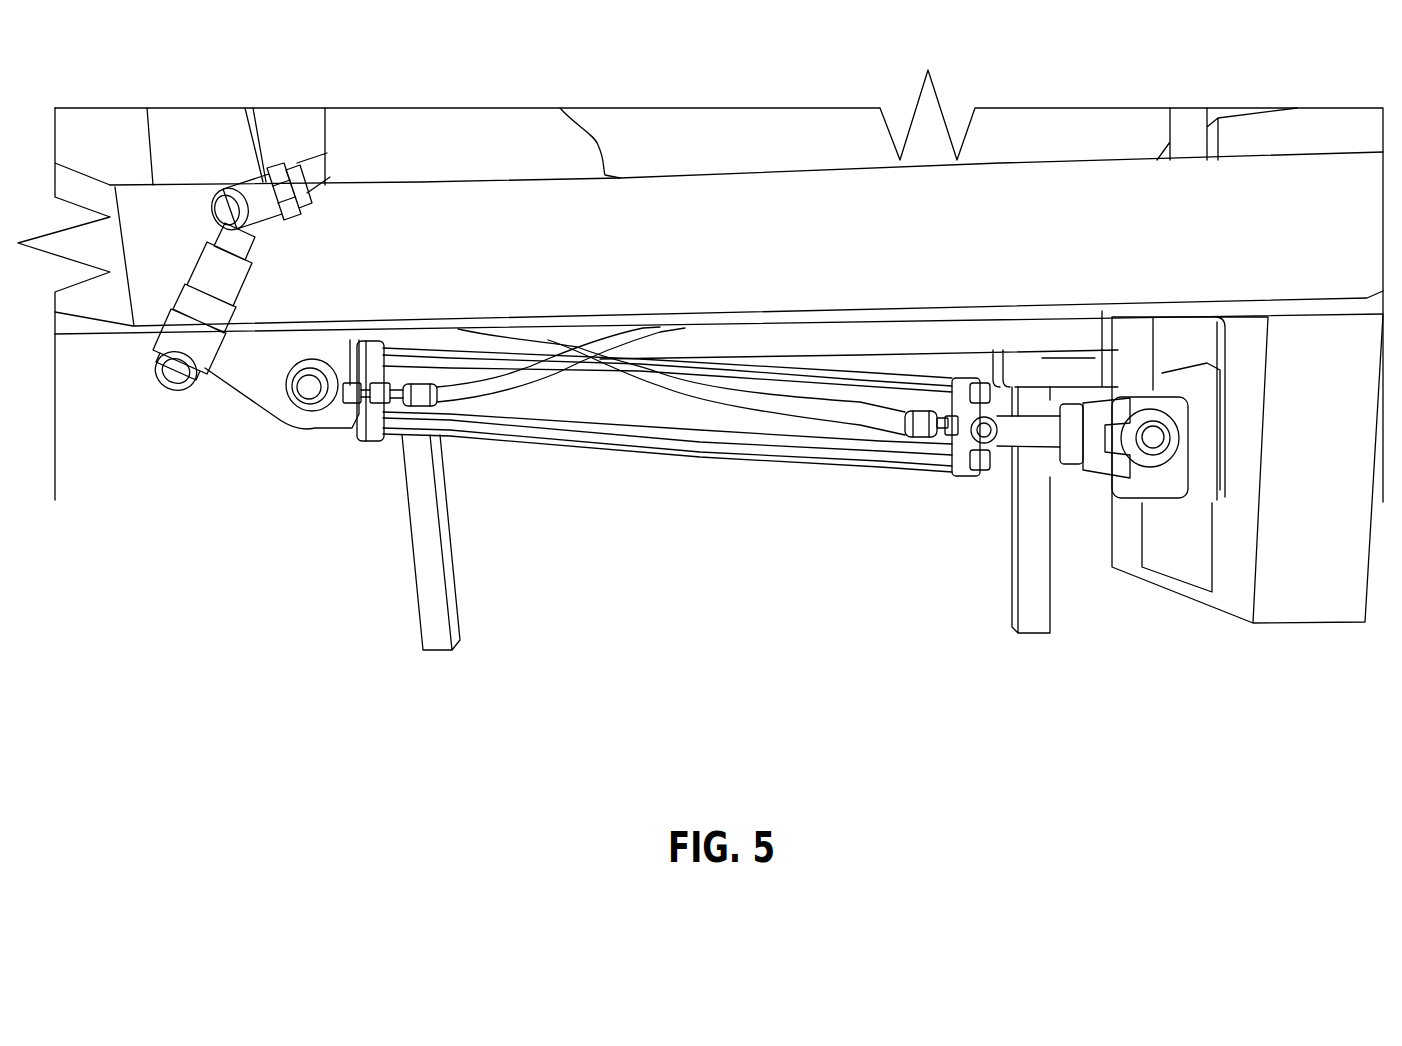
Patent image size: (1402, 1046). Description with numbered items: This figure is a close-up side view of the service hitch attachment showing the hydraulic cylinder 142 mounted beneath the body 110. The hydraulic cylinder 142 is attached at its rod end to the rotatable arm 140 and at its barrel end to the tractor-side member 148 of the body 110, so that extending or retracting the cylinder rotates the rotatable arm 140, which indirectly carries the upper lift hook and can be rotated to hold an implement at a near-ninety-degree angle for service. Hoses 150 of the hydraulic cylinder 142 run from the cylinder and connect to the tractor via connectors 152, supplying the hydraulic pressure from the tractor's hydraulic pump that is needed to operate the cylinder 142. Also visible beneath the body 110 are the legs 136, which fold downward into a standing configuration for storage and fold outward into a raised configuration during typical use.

The body 110 is at (783, 238).
The legs 136 is at (433, 645).
The rotatable arm 140 is at (1190, 142).
The hydraulic cylinder 142 is at (620, 442).
The tractor-side member 148 is at (272, 398).
The hoses 150 is at (475, 392).
The connectors 152 is at (233, 188).